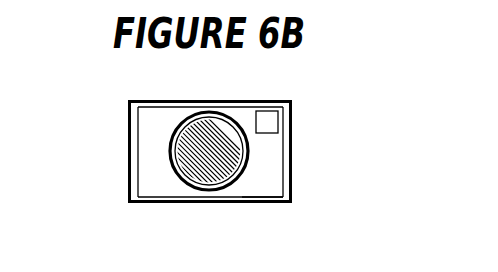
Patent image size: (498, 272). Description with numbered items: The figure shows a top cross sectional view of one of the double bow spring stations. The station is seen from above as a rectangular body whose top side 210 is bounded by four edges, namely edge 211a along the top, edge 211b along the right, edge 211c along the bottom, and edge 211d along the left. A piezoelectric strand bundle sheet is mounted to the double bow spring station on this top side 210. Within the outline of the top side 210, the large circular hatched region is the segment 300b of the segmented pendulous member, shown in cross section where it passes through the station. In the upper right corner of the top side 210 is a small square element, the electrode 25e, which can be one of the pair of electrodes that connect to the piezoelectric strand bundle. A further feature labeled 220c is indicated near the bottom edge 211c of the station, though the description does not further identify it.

The top side 210 is at (160, 100).
The edge 211a is at (212, 100).
The edge 211b is at (292, 152).
The edge 211c is at (212, 203).
The edge 211d is at (128, 150).
The electrode 25e is at (268, 108).
The segment of the segmented pendulous member 300b is at (172, 161).
The inner bottom edge 220c is at (253, 188).